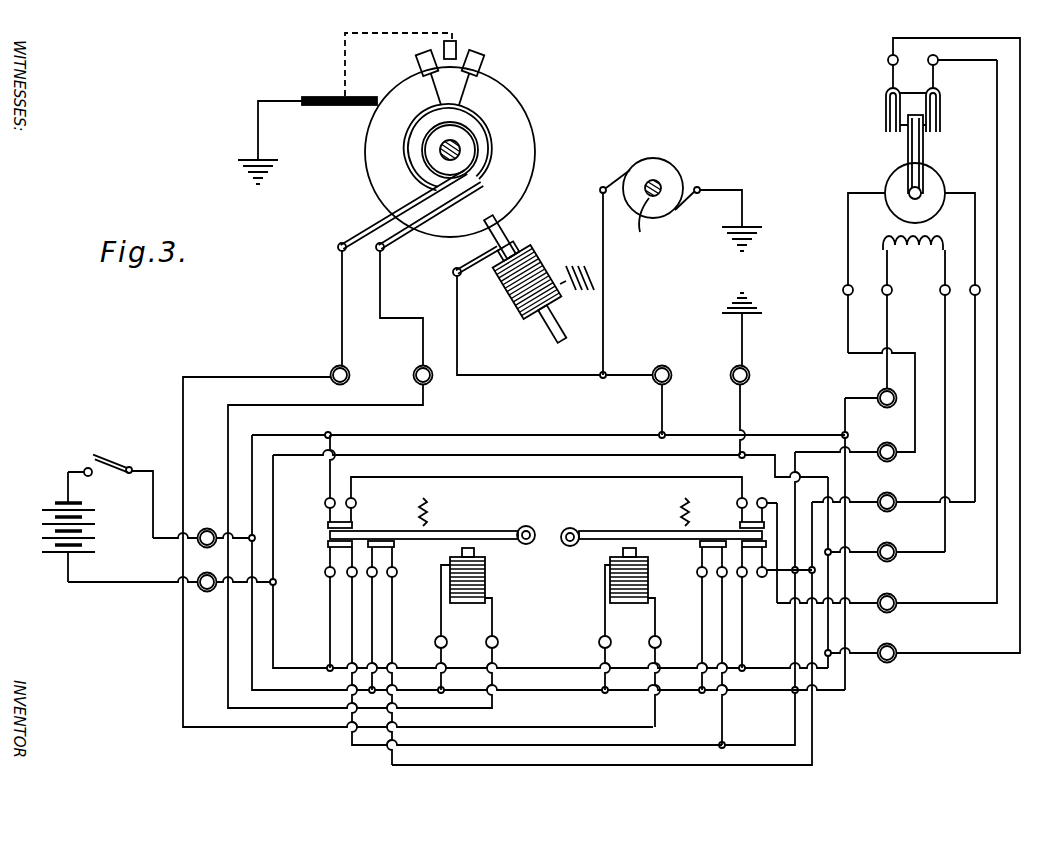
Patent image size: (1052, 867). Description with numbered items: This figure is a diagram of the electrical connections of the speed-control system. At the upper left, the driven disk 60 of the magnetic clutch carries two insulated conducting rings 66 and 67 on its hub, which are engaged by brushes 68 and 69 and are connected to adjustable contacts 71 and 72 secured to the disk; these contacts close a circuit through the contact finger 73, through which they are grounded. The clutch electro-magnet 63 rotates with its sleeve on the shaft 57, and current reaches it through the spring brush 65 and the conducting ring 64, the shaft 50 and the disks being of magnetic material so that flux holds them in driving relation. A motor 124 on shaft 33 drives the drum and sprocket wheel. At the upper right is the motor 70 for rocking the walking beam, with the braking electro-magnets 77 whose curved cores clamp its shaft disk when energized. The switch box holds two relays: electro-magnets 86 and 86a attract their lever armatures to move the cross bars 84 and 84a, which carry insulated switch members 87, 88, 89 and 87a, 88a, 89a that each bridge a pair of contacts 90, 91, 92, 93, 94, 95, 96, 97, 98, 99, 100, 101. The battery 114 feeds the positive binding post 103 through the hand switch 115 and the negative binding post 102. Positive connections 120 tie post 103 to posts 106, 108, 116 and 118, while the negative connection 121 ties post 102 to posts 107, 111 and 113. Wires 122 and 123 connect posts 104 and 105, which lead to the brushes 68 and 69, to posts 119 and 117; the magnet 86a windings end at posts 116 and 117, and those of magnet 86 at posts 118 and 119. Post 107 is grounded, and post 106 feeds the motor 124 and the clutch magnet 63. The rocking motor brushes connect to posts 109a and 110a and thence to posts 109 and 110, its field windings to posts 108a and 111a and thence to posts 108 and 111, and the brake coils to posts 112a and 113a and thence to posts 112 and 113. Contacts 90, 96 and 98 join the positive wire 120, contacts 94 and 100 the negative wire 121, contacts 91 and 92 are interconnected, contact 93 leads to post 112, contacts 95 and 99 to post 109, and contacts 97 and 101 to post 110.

The shaft 33 is at (650, 210).
The shaft 50 is at (440, 151).
The shaft 57 is at (556, 322).
The driven disk 60 is at (507, 95).
The electro-magnet 63 is at (545, 258).
The conducting ring 64 is at (518, 226).
The spring brush 65 is at (470, 268).
The conducting ring 66 is at (488, 133).
The conducting ring 67 is at (480, 153).
The brush 68 is at (386, 222).
The brush 69 is at (397, 239).
The motor 70 is at (908, 169).
The adjustable contact 71 is at (483, 60).
The adjustable contact 72 is at (420, 58).
The contact finger 73 is at (458, 46).
The electro-magnets 77 is at (886, 100).
The cross bar 84 is at (663, 531).
The cross bar 84a is at (473, 531).
The electro-magnet 86 is at (630, 592).
The electro-magnet 86a is at (466, 592).
The switch member 87 is at (740, 525).
The switch member 87a is at (328, 525).
The switch member 88 is at (766, 545).
The switch member 88a is at (328, 545).
The switch member 89 is at (700, 547).
The switch member 89a is at (395, 548).
The contact 90 is at (326, 505).
The contact 91 is at (355, 508).
The contact 92 is at (742, 514).
The contact 93 is at (766, 515).
The contact 94 is at (327, 607).
The contact 95 is at (532, 646).
The contact 96 is at (370, 618).
The contact 97 is at (390, 656).
The contact 98 is at (700, 618).
The contact 99 is at (721, 646).
The contact 100 is at (741, 607).
The contact 101 is at (783, 562).
The binding post 102 is at (170, 591).
The binding post 103 is at (202, 532).
The binding post 104 is at (353, 322).
The binding post 105 is at (418, 323).
The binding post 106 is at (675, 401).
The binding post 107 is at (754, 411).
The binding post 108 is at (871, 407).
The binding post 108a is at (901, 337).
The binding post 109 is at (855, 412).
The binding post 109a is at (833, 319).
The binding post 110 is at (893, 511).
The binding post 110a is at (969, 393).
The binding post 111 is at (886, 561).
The binding post 111a is at (935, 413).
The binding post 112 is at (887, 345).
The binding post 112a is at (962, 71).
The binding post 113 is at (924, 359).
The binding post 113a is at (878, 71).
The source of electrical energy 114 is at (49, 527).
The hand switch 115 is at (110, 491).
The binding post 116 is at (430, 663).
The binding post 117 is at (506, 646).
The binding post 118 is at (596, 663).
The binding post 119 is at (669, 681).
The connections 120 is at (530, 437).
The connection 121 is at (570, 455).
The wire 122 is at (218, 377).
The wire 123 is at (258, 405).
The motor 124 is at (653, 182).